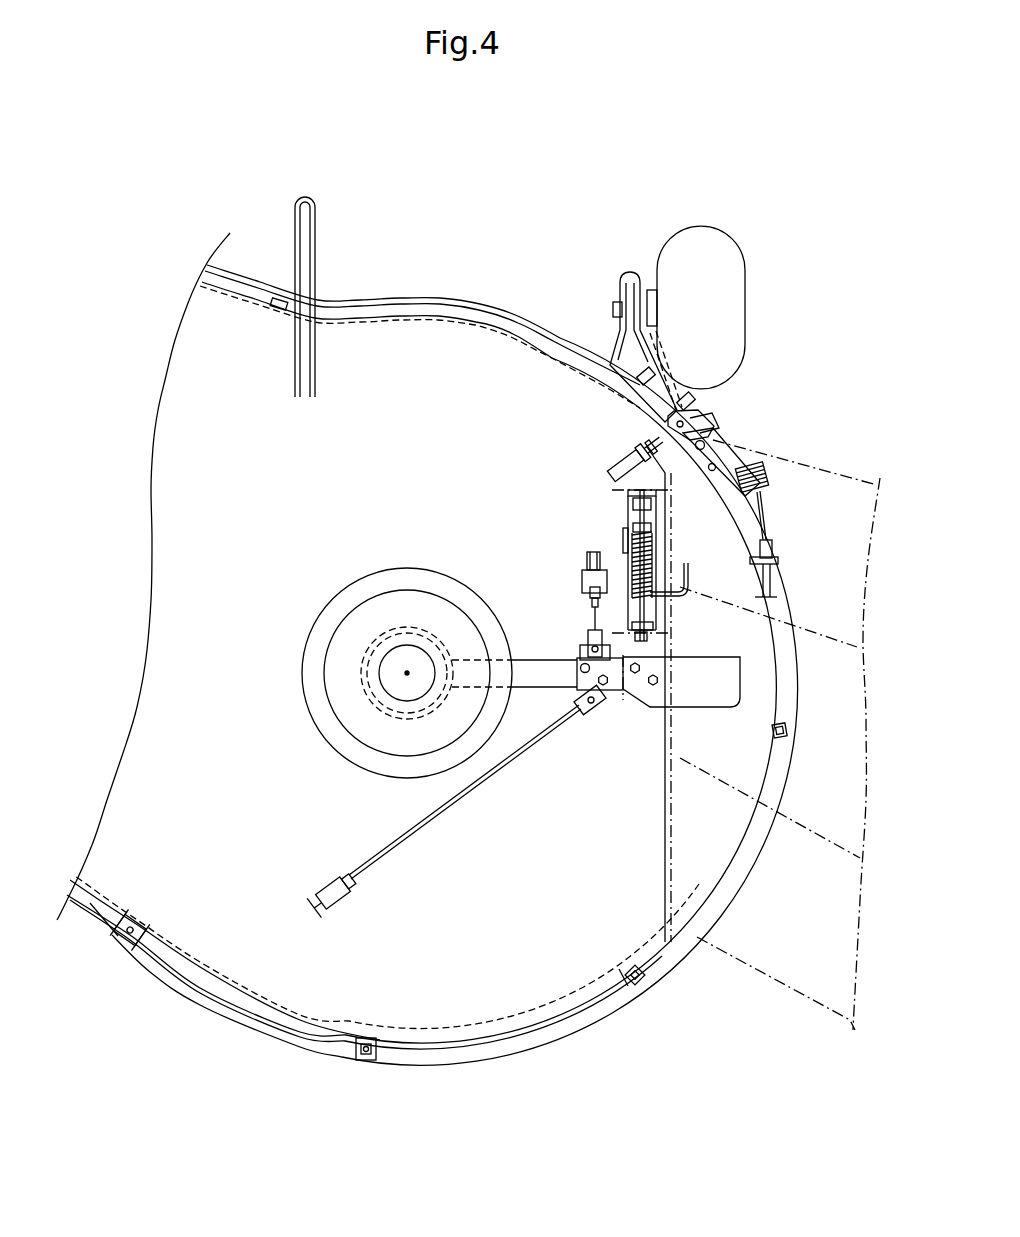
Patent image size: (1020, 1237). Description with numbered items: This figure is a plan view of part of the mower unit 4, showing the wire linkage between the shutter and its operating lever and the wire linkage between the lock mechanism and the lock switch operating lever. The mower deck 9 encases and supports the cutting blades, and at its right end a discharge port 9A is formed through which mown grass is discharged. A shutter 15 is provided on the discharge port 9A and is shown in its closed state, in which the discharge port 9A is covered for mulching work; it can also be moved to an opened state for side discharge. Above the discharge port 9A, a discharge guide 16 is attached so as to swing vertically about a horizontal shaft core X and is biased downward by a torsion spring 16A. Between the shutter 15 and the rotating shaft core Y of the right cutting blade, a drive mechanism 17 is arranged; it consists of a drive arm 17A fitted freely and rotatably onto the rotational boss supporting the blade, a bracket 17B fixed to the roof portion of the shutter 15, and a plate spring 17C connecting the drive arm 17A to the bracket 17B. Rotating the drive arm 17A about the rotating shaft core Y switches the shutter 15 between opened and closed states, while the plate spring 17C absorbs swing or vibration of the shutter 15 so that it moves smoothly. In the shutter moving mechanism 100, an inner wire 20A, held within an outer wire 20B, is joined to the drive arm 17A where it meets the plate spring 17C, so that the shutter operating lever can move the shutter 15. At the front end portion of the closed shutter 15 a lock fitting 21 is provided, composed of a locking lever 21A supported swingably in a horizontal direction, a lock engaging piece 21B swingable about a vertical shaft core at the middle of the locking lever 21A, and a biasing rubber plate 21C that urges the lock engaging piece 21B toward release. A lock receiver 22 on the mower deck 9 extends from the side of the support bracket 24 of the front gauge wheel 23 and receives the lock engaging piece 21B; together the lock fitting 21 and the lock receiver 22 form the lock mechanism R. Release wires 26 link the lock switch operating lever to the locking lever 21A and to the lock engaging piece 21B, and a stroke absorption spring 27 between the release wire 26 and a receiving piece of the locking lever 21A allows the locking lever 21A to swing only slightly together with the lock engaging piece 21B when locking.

The mower unit 4 is at (456, 252).
The mower deck 9 is at (428, 362).
The discharge port 9A is at (723, 633).
The shutter 15 is at (732, 840).
The discharge guide 16 is at (775, 977).
The torsion spring 16A is at (655, 570).
The drive mechanism 17 is at (624, 697).
The drive arm 17A is at (540, 675).
The bracket 17B is at (710, 685).
The plate spring 17C is at (610, 716).
The inner wire 20A is at (591, 610).
The outer wire 20B is at (308, 898).
The lock fitting 21 is at (731, 449).
The locking lever 21A is at (726, 472).
The lock engaging piece 21B is at (676, 418).
The biasing rubber plate 21C is at (713, 428).
The lock receiver 22 is at (667, 413).
The front gauge wheel 23 is at (712, 245).
The support bracket 24 is at (618, 345).
The release wire 26 is at (628, 462).
The stroke absorption spring 27 is at (745, 480).
The shutter moving mechanism 100 is at (784, 449).
The lock mechanism R is at (728, 402).
The horizontal shaft core X is at (612, 512).
The rotating shaft core Y is at (405, 671).